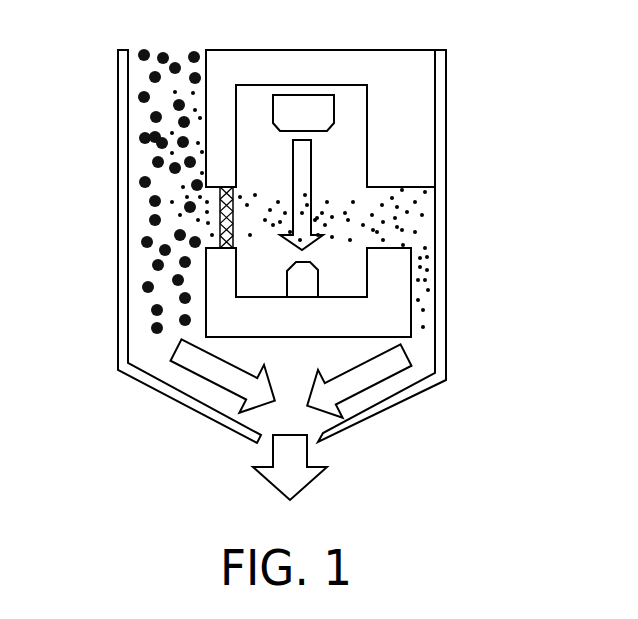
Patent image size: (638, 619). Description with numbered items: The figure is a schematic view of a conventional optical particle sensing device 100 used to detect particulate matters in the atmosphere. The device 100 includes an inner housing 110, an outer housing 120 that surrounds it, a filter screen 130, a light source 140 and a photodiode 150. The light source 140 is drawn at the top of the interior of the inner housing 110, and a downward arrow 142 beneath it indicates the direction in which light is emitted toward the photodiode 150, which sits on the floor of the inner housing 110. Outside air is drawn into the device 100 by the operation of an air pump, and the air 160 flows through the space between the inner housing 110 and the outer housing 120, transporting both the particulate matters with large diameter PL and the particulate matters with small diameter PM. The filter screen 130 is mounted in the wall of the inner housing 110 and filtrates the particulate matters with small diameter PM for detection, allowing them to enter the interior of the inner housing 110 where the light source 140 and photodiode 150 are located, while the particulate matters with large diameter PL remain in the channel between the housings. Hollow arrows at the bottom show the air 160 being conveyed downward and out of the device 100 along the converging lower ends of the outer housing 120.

The optical particle sensing device 100 is at (470, 537).
The inner housing 110 is at (392, 62).
The outer housing 120 is at (122, 103).
The filter screen 130 is at (222, 231).
The light source 140 is at (307, 105).
The pushing direction arrow / piston 142 is at (305, 163).
The photodiode 150 is at (297, 287).
The air 160 is at (193, 363).
The particulate matters with large diameter PL is at (144, 49).
The particulate matters with small diameter PM is at (460, 200).